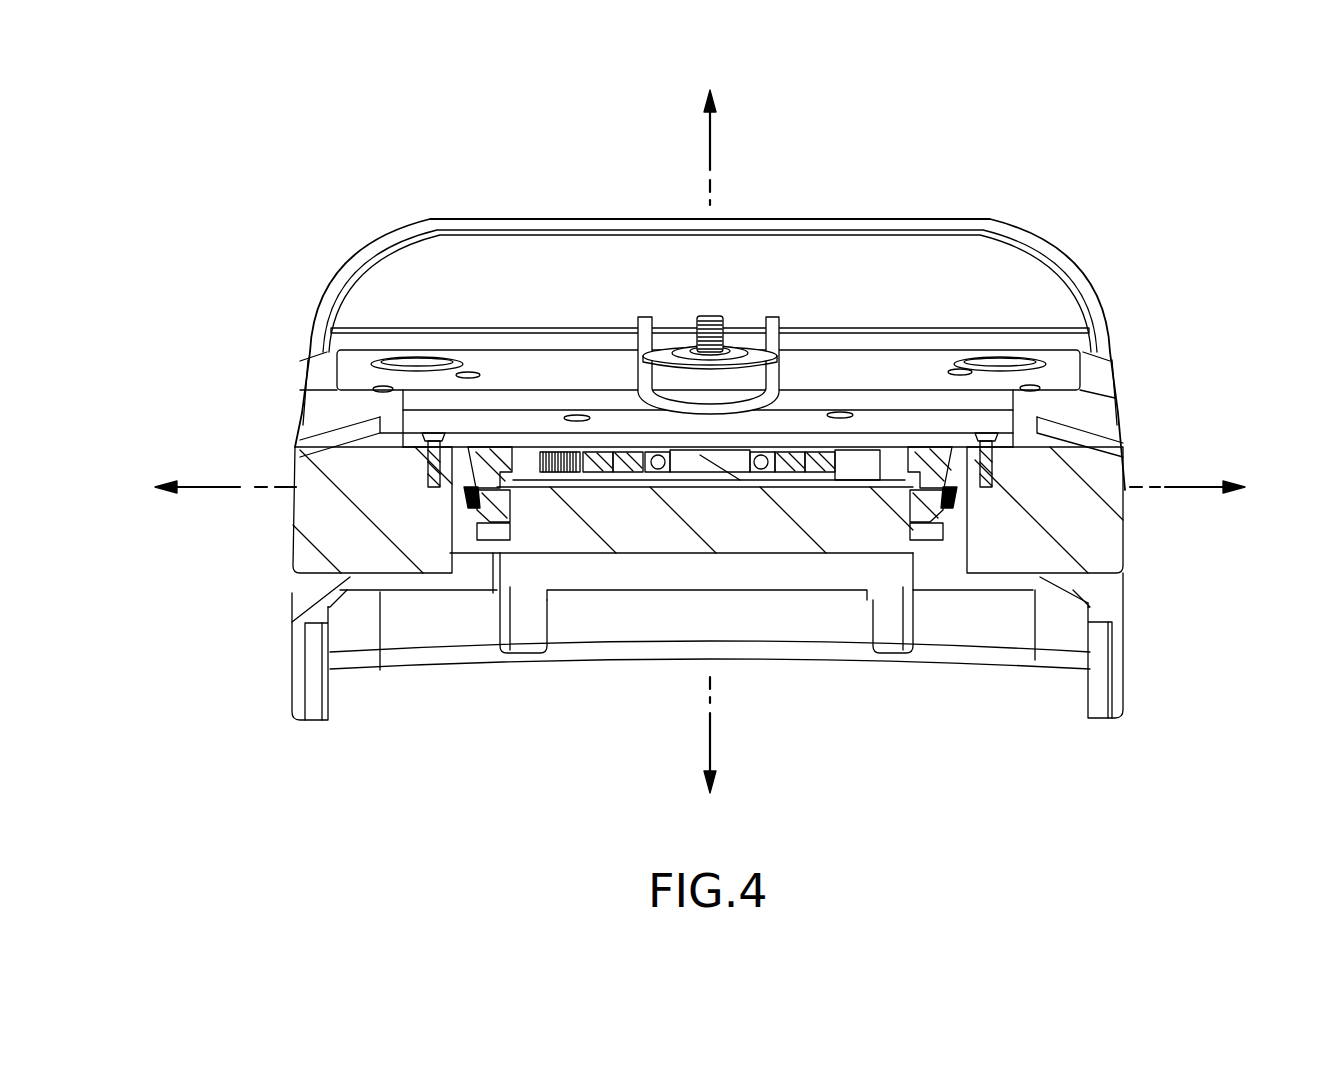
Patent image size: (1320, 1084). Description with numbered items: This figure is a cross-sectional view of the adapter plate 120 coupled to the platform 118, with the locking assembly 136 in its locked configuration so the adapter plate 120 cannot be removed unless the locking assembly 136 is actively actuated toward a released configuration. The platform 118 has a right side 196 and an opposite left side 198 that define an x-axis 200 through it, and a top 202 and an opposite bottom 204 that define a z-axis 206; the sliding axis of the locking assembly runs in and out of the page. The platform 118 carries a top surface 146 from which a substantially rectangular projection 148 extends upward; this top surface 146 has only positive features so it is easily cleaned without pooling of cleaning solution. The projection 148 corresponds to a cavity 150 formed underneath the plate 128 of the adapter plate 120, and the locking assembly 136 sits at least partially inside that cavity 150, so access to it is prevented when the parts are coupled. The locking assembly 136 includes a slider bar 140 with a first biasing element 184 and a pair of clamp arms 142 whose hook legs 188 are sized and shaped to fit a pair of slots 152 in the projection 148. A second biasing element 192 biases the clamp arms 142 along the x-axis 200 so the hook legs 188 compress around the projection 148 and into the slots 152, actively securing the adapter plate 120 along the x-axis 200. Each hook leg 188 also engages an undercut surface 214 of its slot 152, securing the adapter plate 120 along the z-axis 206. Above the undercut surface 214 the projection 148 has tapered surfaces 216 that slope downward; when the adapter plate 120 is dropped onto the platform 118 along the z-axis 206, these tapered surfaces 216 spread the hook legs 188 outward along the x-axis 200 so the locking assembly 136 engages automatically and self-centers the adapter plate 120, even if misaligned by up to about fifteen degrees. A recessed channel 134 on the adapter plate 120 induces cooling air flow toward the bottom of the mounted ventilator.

The platform 118 is at (746, 649).
The adapter plate 120 is at (729, 342).
The plate 128 is at (745, 295).
The recessed channel 134 is at (743, 407).
The locking assembly 136 is at (708, 403).
The slider bar 140 is at (731, 382).
The clamp arms 142 is at (708, 390).
The top surface 146 is at (675, 519).
The projection 148 is at (722, 527).
The cavity 150 is at (657, 404).
The slots 152 is at (704, 618).
The first biasing element 184 is at (663, 365).
The hook leg 188 is at (702, 520).
The second biasing element 192 is at (541, 412).
The right side 196 is at (1187, 450).
The left side 198 is at (251, 444).
The x-axis 200 is at (220, 513).
The top 202 is at (779, 147).
The bottom 204 is at (844, 755).
The z-axis 206 is at (747, 746).
The undercut surface 214 is at (710, 505).
The tapered surfaces 216 is at (718, 464).